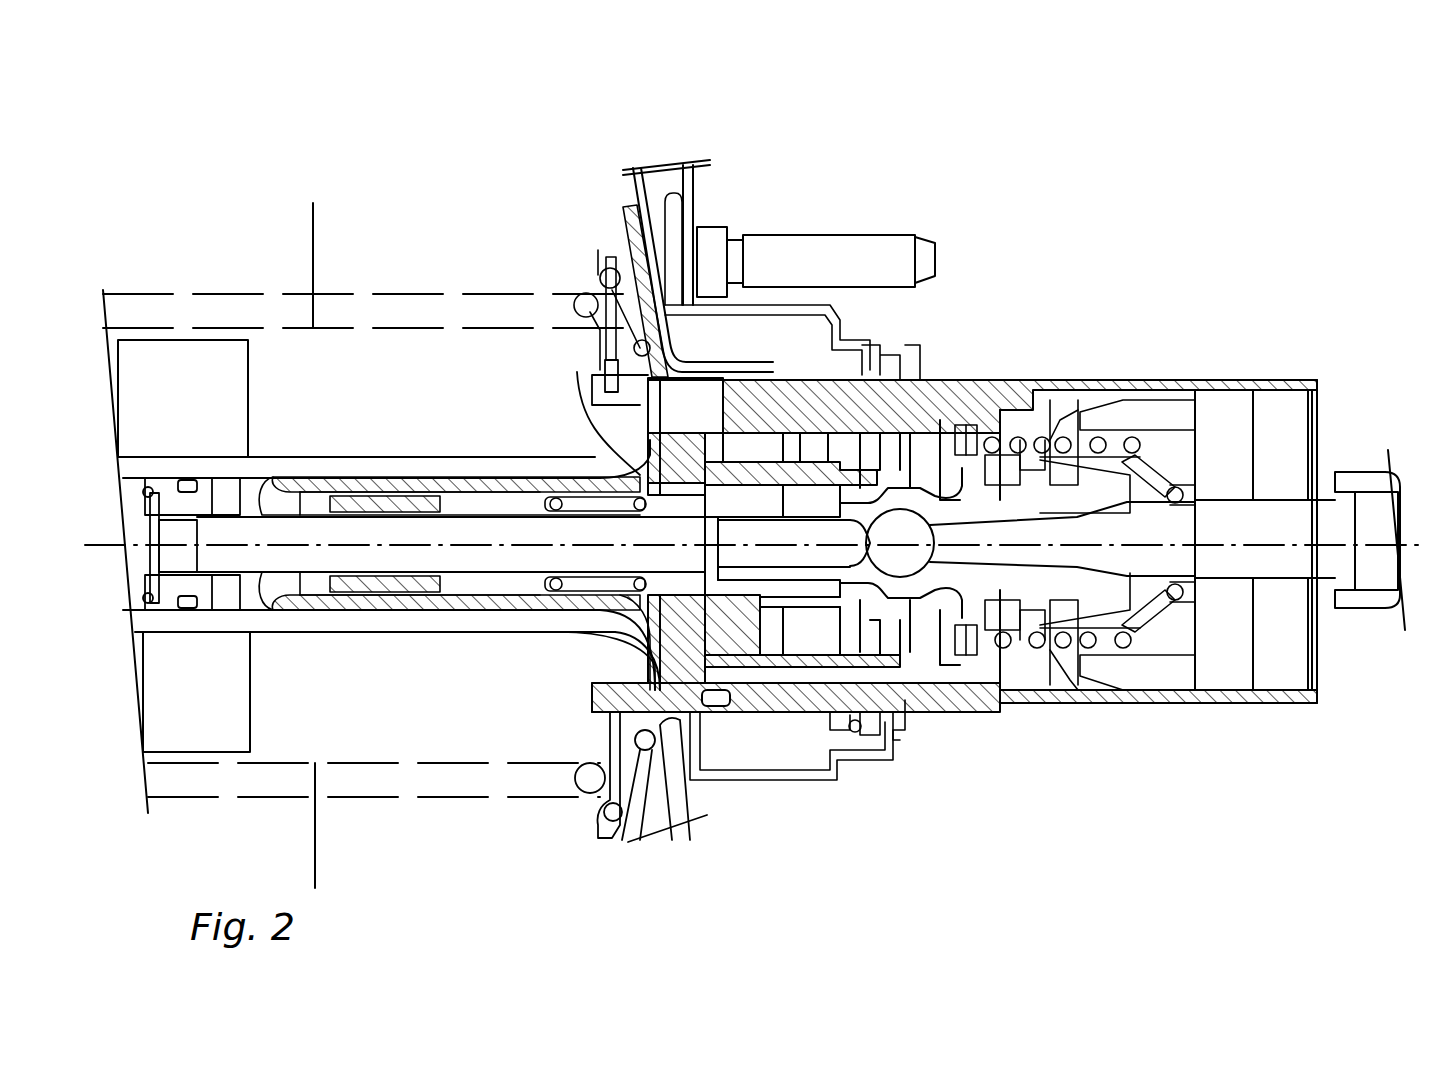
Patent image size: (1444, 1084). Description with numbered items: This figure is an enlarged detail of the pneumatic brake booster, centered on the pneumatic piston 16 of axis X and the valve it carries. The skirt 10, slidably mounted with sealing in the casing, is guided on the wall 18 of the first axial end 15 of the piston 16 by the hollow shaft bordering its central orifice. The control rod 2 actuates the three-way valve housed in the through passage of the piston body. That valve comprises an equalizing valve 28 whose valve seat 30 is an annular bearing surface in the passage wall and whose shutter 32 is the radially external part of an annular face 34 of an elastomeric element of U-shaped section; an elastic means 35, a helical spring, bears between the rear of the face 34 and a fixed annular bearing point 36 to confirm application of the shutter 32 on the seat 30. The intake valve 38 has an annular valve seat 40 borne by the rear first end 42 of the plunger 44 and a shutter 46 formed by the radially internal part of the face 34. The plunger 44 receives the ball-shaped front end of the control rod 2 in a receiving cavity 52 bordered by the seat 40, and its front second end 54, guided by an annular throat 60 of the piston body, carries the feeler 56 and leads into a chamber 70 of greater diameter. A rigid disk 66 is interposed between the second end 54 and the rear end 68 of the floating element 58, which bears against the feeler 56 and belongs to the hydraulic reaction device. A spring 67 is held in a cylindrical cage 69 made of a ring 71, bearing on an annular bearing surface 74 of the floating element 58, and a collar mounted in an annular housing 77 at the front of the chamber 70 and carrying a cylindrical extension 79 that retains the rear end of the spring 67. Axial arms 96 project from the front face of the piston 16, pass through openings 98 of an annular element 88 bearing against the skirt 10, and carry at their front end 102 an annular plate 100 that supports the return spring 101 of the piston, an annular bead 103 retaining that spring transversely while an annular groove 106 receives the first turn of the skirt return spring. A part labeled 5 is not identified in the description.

The control rod 2 is at (1330, 590).
The ball joint 5 is at (887, 585).
The skirt 10 is at (648, 192).
The first axial end of the pneumatic piston 15 is at (703, 255).
The pneumatic piston 16 is at (1063, 340).
The wall of the first end of the piston 18 is at (693, 825).
The equalizing valve 28 is at (1000, 690).
The valve seat 30 is at (975, 705).
The shutter 32 is at (1005, 700).
The annular face 34 is at (958, 450).
The elastic means 35 is at (1070, 393).
The fixed annular bearing point 36 is at (1150, 425).
The intake valve 38 is at (1150, 455).
The annular valve seat 40 is at (915, 735).
The rear axial first end of the plunger 42 is at (932, 455).
The plunger 44 is at (765, 712).
The shutter 46 is at (1065, 690).
The receiving cavity 52 is at (863, 760).
The front axial second end of the plunger 54 is at (782, 378).
The feeler 56 is at (728, 775).
The floating element 58 is at (365, 572).
The annular throat 60 is at (785, 500).
The rigid disk 66 is at (645, 600).
The spring 67 is at (525, 490).
The rear second end of the floating element 68 is at (698, 548).
The cylindrical cage 69 is at (562, 490).
The chamber 70 is at (715, 460).
The ring 71 is at (625, 630).
The annular bearing surface 74 is at (520, 630).
The annular housing 77 is at (712, 712).
The cylindrical extension 79 is at (602, 470).
The annular element 88 is at (616, 190).
The axial arms 96 is at (628, 845).
The openings 98 is at (665, 845).
The annular plate 100 is at (598, 250).
The return spring 101 is at (390, 305).
The front end of the axial arms 102 is at (595, 712).
The annular bead 103 is at (598, 283).
The annular groove 106 is at (580, 294).
The axis X is at (1401, 512).